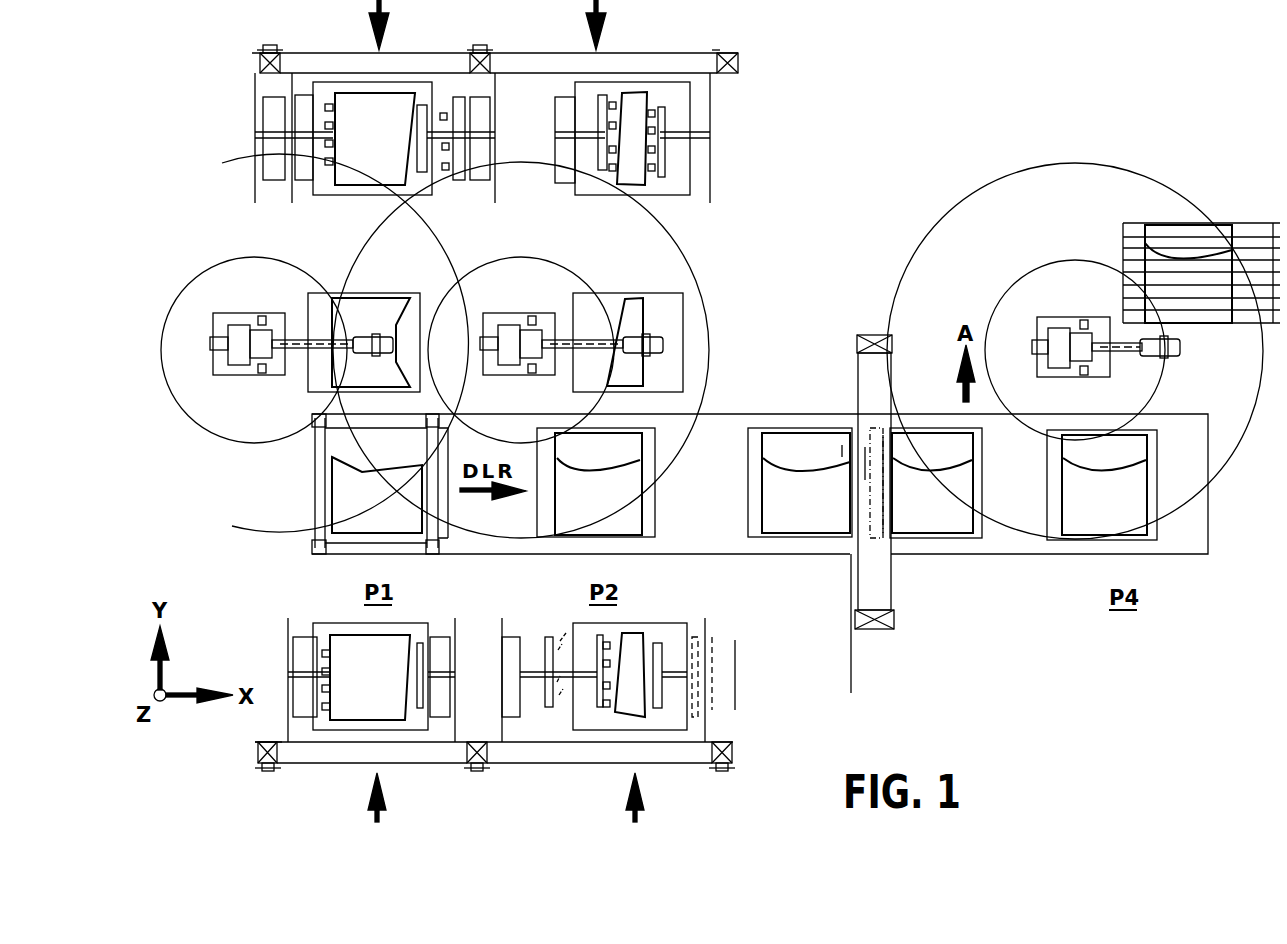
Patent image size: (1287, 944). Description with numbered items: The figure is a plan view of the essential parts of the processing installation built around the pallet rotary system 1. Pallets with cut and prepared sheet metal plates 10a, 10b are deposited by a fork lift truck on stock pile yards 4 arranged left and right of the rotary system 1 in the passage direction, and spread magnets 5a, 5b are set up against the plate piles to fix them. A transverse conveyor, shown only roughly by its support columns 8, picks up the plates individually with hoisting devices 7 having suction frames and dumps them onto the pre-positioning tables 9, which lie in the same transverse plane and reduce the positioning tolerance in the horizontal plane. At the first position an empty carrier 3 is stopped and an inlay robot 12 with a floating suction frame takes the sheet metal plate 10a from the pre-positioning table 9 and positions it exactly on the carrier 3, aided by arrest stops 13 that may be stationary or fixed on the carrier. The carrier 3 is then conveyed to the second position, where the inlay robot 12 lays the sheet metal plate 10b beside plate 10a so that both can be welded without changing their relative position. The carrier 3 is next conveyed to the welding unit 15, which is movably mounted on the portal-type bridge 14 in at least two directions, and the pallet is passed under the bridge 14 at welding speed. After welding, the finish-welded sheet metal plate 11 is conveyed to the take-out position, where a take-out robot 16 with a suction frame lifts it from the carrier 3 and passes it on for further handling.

The pallet rotary system 1 is at (1206, 560).
The component part carrier 3 is at (1160, 487).
The stock pile yard 4 is at (402, 728).
The spread magnet 5a is at (300, 702).
The spread magnet 5b is at (598, 708).
The hoisting device with suction frame 7 is at (1245, 238).
The support columns 8 is at (264, 765).
The pre-positioning table 9 is at (313, 305).
The sheet metal plate 10a is at (384, 148).
The sheet metal plate 10b is at (628, 148).
The welded sheet metal plate 11 is at (1168, 273).
The inlay robot 12 is at (240, 316).
The arrest stops 13 is at (305, 490).
The portal-type bridge 14 is at (876, 372).
The welding unit 15 is at (860, 453).
The take-out robot 16 is at (1050, 318).